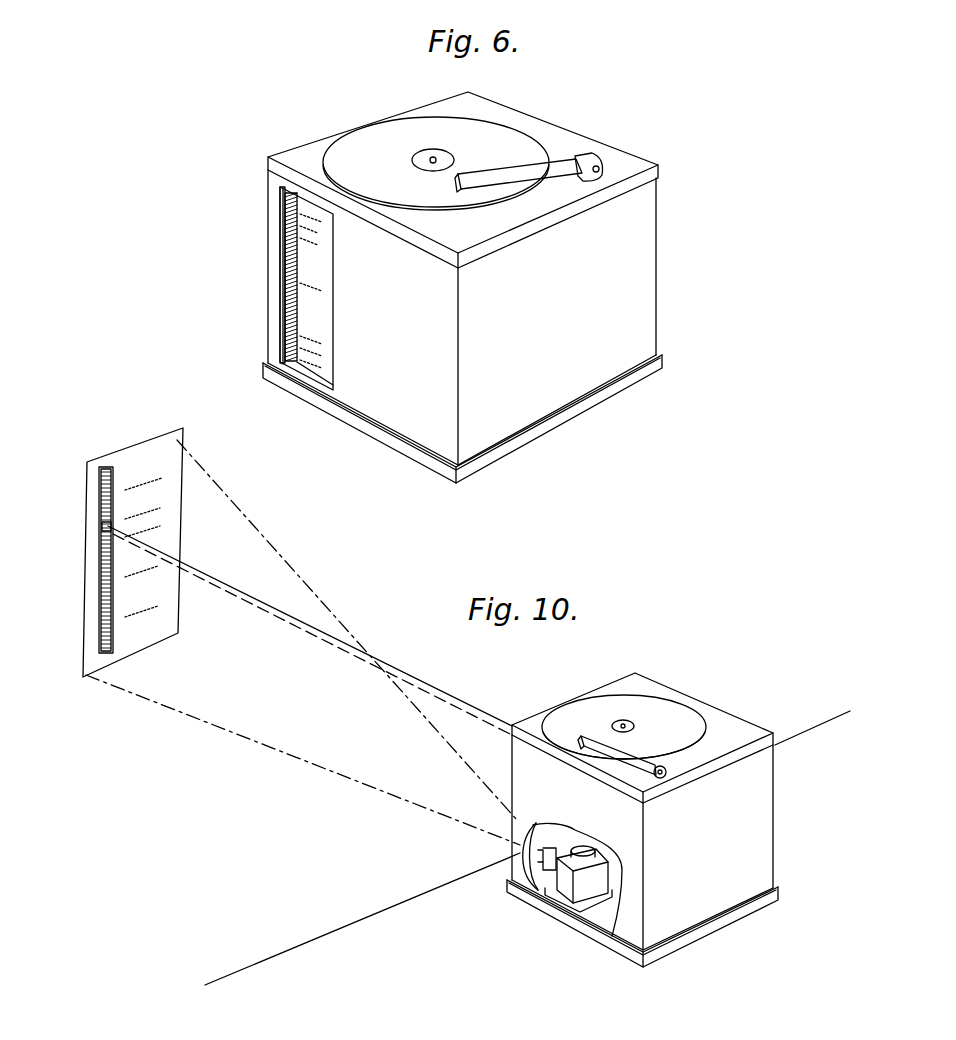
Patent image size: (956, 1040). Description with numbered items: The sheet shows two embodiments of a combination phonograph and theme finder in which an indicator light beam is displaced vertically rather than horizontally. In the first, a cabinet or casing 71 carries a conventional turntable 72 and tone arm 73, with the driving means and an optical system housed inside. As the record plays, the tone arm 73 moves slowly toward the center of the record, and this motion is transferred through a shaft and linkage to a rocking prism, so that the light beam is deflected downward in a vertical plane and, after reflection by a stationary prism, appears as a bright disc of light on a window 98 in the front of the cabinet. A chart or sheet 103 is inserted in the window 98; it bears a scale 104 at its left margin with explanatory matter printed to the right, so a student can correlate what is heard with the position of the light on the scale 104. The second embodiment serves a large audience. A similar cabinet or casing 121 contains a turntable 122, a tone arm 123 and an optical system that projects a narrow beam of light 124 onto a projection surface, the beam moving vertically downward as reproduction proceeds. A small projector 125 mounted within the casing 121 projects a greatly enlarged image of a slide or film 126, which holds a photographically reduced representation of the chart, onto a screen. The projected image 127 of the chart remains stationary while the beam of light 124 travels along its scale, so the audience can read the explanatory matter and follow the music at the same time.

In FIG. 6, the cabinet or casing 71 is at (630, 292).
In FIG. 6, the turntable 72 is at (510, 148).
In FIG. 6, the tone arm 73 is at (550, 170).
In FIG. 6, the window 98 is at (280, 262).
In FIG. 6, the chart or sheet 103 is at (317, 317).
In FIG. 6, the scale 104 is at (290, 305).
In FIG. 10, the cabinet or casing 121 is at (748, 815).
In FIG. 10, the turntable 122 is at (667, 717).
In FIG. 10, the tone arm 123 is at (587, 737).
In FIG. 10, the beam of light 124 is at (430, 688).
In FIG. 10, the projector 125 is at (580, 913).
In FIG. 10, the slide or film 126 is at (543, 893).
In FIG. 10, the projected image of the chart 127 is at (170, 500).